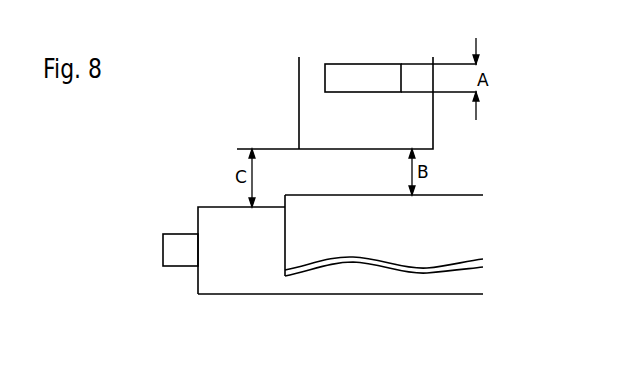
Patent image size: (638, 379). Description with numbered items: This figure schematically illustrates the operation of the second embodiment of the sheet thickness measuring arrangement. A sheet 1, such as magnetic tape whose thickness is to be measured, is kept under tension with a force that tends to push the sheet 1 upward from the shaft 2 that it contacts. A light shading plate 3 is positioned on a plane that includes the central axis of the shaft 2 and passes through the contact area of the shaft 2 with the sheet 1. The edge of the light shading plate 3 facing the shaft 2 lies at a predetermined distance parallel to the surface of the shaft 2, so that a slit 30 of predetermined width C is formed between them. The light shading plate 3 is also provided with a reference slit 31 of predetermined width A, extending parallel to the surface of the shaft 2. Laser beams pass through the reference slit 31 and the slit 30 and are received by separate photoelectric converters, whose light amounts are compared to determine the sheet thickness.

The sheet 1 is at (468, 238).
The shaft 2 is at (248, 295).
The light shading plate 3 is at (434, 148).
The slit 30 is at (301, 167).
The reference slit 31 is at (384, 75).